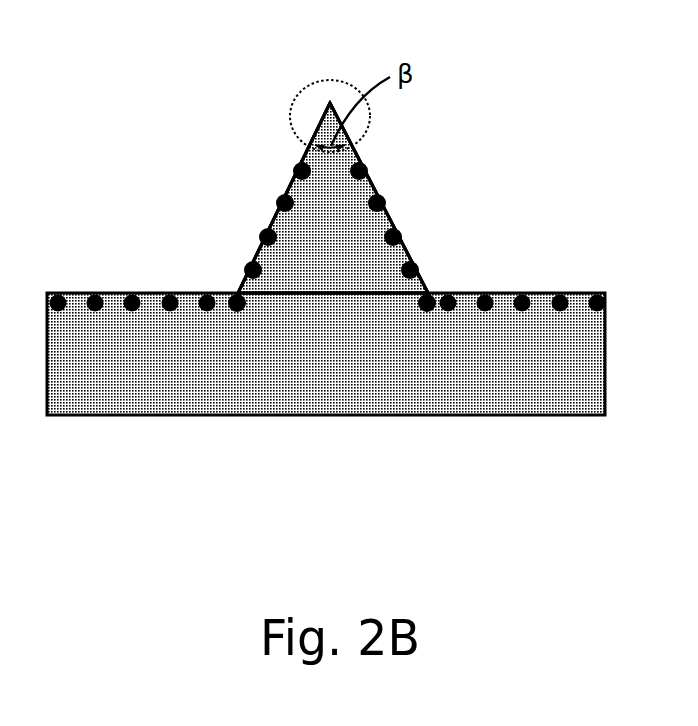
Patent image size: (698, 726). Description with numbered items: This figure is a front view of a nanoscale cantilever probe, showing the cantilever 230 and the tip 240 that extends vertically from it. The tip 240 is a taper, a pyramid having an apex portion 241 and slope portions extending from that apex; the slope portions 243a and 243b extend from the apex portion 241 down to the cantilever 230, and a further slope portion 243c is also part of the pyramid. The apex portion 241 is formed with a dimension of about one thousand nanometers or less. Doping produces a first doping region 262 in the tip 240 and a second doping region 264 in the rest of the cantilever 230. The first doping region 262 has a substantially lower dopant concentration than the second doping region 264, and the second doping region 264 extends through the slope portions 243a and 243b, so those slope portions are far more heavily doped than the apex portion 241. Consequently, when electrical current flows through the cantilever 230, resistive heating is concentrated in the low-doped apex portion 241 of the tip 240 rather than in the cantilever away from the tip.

The cantilever 230 is at (630, 350).
The tip 240 is at (452, 168).
The apex portion 241 is at (313, 85).
The slope portion 243a is at (374, 185).
The slope portion 243b is at (277, 213).
The slope portion 243c is at (317, 237).
The first doping region 262 is at (338, 258).
The second doping region 264 is at (257, 223).